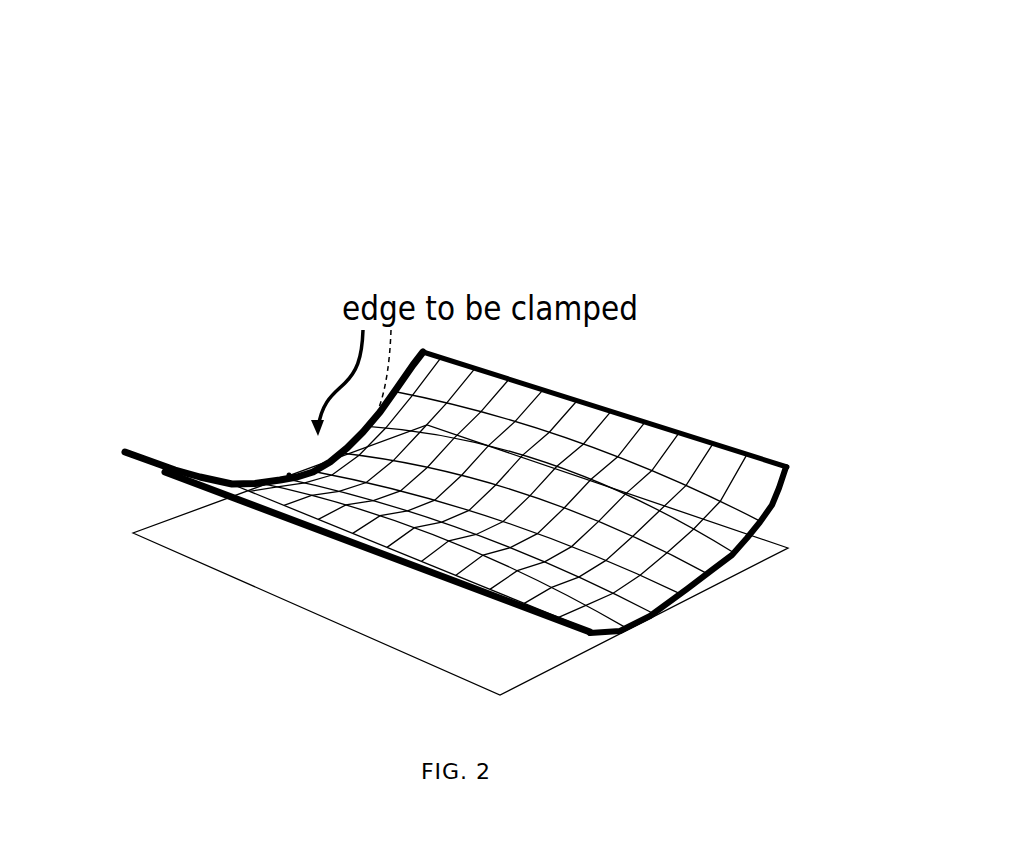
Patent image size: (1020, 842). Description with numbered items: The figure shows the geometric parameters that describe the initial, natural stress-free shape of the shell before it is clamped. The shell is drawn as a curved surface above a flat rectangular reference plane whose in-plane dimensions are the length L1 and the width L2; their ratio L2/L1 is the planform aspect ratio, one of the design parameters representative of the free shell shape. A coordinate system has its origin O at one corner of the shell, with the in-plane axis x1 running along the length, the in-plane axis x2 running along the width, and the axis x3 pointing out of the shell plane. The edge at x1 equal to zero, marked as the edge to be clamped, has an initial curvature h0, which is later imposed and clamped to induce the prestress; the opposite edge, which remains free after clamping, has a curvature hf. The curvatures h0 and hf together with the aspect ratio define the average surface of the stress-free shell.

The x1 coordinate axis x1 is at (289, 475).
The x2 coordinate axis x2 is at (289, 475).
The x3 coordinate axis x3 is at (289, 475).
The origin O is at (276, 461).
The initial curvature of the clamped edge h0 is at (281, 252).
The curvature of the free edge hf is at (708, 550).
The shell length L1 is at (474, 686).
The shell width L2 is at (770, 556).